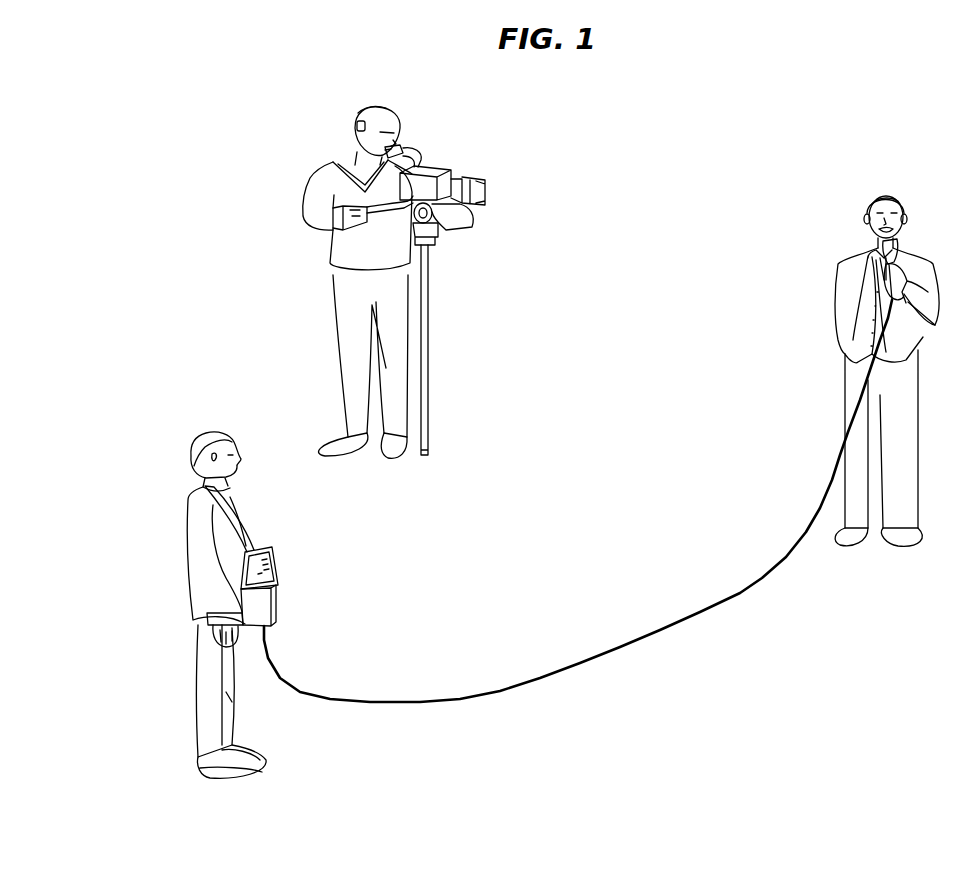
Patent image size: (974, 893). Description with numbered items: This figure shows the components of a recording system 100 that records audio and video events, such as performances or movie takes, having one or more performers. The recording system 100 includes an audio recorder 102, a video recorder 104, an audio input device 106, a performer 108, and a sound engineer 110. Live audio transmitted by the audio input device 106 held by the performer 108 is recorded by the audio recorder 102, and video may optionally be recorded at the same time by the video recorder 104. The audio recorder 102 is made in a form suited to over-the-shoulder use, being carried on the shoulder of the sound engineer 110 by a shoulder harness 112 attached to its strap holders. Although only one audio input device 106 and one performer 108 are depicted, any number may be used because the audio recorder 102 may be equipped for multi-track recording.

The recording system 100 is at (676, 148).
The audio recorder 102 is at (277, 589).
The video recorder 104 is at (436, 170).
The audio input device 106 is at (896, 250).
The performer 108 is at (901, 201).
The sound engineer 110 is at (186, 550).
The shoulder harness 112 is at (197, 492).